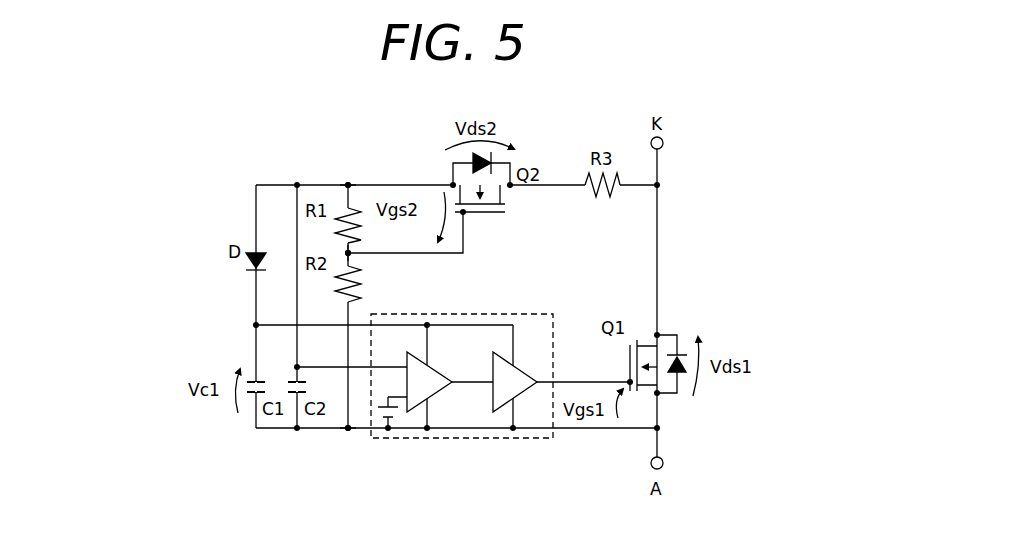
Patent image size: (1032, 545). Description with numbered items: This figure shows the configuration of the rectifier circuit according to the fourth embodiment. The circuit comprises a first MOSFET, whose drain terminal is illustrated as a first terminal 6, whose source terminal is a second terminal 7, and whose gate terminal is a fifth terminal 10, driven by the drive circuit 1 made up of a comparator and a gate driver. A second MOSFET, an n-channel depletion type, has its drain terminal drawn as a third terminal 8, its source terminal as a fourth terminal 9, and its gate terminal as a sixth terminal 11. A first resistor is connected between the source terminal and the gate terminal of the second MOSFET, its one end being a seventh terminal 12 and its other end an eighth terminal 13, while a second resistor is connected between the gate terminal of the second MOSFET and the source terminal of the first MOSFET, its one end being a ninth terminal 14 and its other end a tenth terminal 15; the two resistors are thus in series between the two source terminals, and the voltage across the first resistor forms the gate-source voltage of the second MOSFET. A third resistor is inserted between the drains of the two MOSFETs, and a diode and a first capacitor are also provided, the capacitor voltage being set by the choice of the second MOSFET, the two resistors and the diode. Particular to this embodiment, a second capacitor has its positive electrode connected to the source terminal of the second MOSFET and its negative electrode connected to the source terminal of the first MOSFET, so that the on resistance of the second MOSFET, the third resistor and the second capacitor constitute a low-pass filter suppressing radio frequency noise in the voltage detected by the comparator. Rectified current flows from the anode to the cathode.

The drive circuit 1 is at (516, 313).
The first terminal 6 is at (660, 334).
The second terminal 7 is at (660, 395).
The third terminal 8 is at (511, 190).
The fourth terminal 9 is at (452, 183).
The fifth terminal 10 is at (628, 380).
The sixth terminal 11 is at (467, 217).
The seventh terminal 12 is at (348, 183).
The eighth terminal 13 is at (352, 256).
The ninth terminal 14 is at (389, 276).
The tenth terminal 15 is at (347, 431).